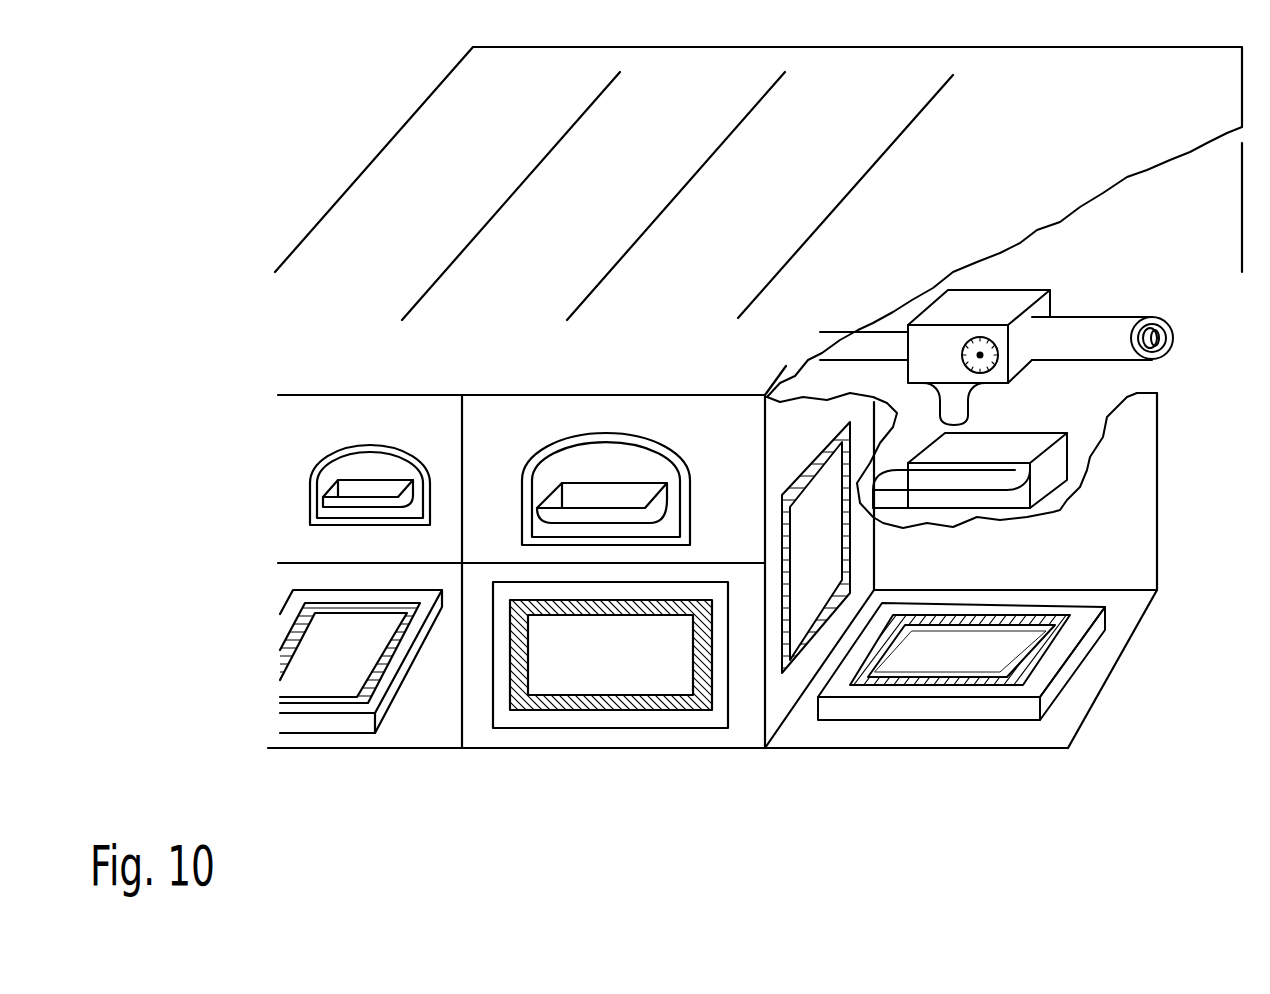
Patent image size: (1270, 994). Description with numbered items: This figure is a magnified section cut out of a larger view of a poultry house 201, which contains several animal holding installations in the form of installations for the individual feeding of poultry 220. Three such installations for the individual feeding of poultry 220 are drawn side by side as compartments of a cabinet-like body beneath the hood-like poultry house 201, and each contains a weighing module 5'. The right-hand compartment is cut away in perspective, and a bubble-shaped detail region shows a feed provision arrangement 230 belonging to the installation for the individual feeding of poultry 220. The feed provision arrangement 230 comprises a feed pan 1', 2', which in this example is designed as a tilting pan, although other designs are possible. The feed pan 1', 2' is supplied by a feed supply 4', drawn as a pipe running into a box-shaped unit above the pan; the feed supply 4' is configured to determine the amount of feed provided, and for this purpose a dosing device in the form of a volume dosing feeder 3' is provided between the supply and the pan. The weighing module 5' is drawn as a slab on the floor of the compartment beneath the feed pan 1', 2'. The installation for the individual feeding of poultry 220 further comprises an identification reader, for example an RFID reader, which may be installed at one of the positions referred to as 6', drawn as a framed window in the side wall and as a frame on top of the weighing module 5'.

The poultry house 201 is at (325, 131).
The feed provision arrangement 230 is at (1133, 290).
The installation for the individual feeding of poultry 220 is at (313, 762).
The volume dosing feeder 3' is at (979, 357).
The feed supply 4' is at (996, 338).
The feed pan 1' is at (987, 470).
The feed pan 2' is at (951, 489).
The position for identification reader 6' is at (930, 556).
The weighing module 5' is at (1002, 661).